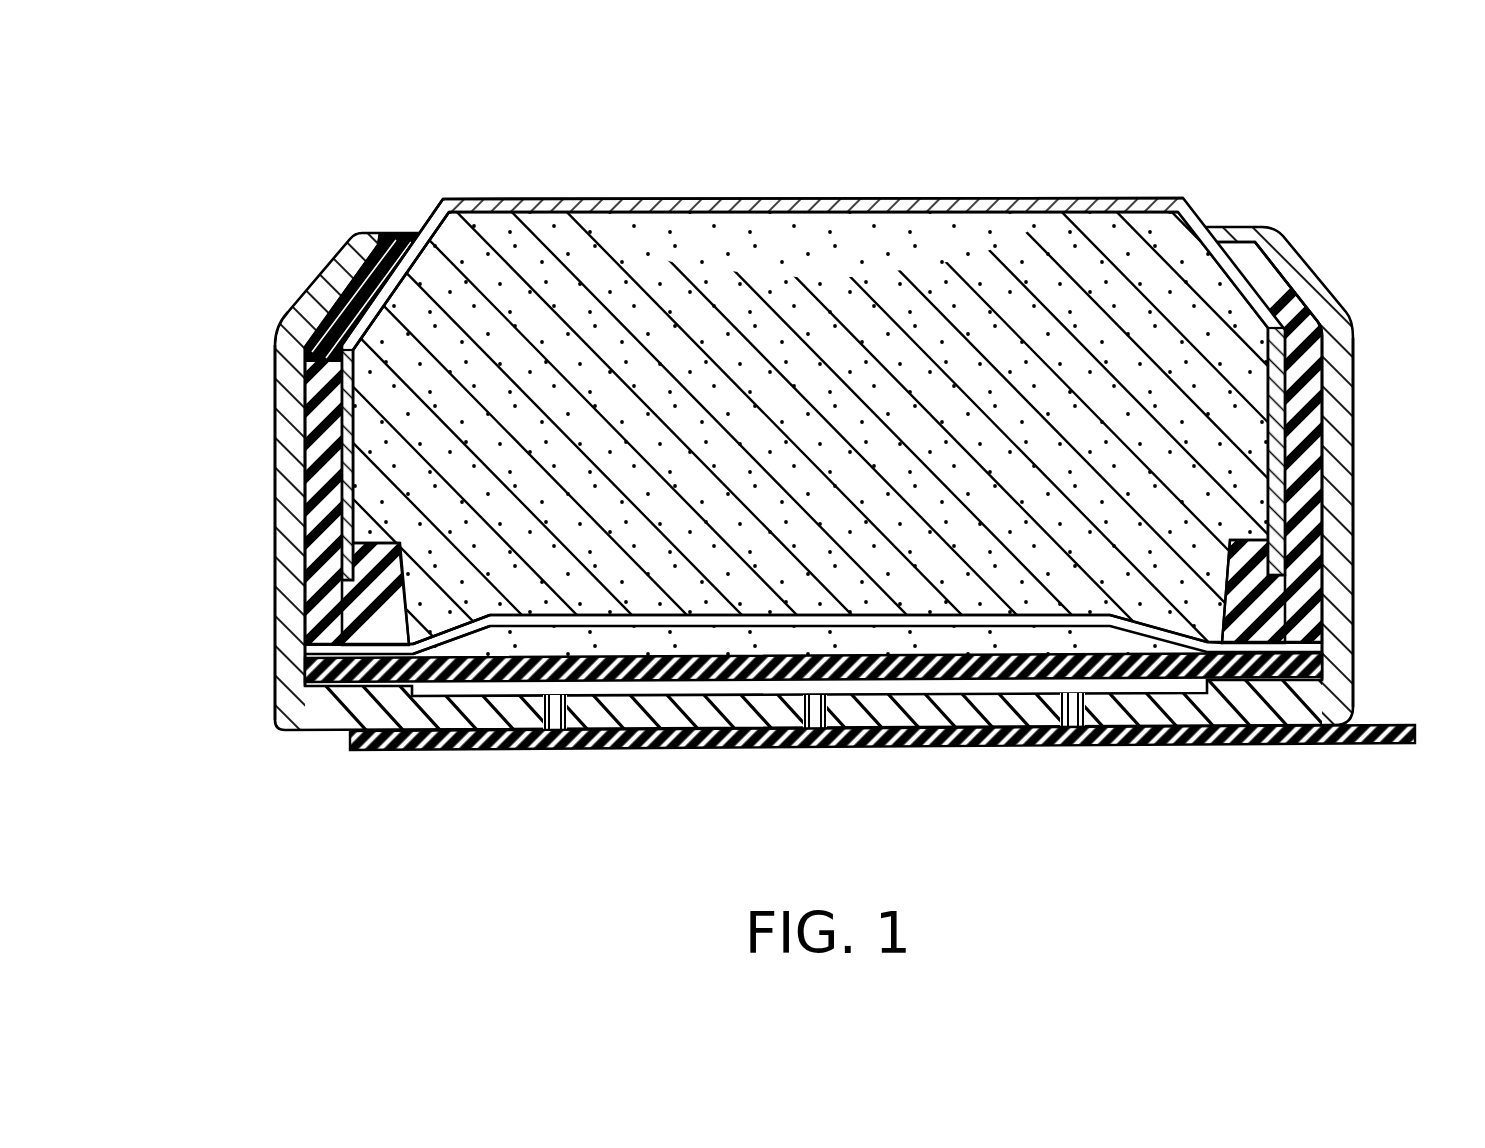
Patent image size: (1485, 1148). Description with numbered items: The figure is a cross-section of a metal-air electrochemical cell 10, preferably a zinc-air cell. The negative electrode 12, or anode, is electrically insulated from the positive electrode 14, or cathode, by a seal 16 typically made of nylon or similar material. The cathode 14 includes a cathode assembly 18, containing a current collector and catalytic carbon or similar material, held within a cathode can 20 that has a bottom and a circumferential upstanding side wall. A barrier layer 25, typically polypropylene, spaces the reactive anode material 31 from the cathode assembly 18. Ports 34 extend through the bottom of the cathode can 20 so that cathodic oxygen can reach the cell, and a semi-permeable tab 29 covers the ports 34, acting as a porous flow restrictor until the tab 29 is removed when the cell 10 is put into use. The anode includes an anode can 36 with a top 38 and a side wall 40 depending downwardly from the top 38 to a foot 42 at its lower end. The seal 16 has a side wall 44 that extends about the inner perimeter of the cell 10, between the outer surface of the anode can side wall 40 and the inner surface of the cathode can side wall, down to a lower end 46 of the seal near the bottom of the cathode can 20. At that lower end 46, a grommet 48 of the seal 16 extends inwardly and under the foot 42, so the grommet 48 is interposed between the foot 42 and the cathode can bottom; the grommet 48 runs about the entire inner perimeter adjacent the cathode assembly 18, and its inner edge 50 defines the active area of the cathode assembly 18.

The metal-air electrochemical cell 10 is at (1343, 225).
The negative electrode 12 is at (989, 196).
The positive electrode 14 is at (1353, 683).
The seal 16 is at (1323, 345).
The cathode assembly 18 is at (625, 647).
The cathode can 20 is at (1350, 603).
The barrier layer 25 is at (920, 622).
The semi-permeable tab 29 is at (1222, 740).
The reactive anode material 31 is at (703, 312).
The ports 34 is at (1077, 733).
The anode can 36 is at (520, 192).
The top 38 is at (633, 199).
The side wall 40 is at (340, 398).
The foot 42 is at (340, 573).
The side wall 44 is at (1313, 492).
The lower end 46 is at (300, 627).
The grommet 48 is at (348, 633).
The inner edge 50 is at (455, 628).